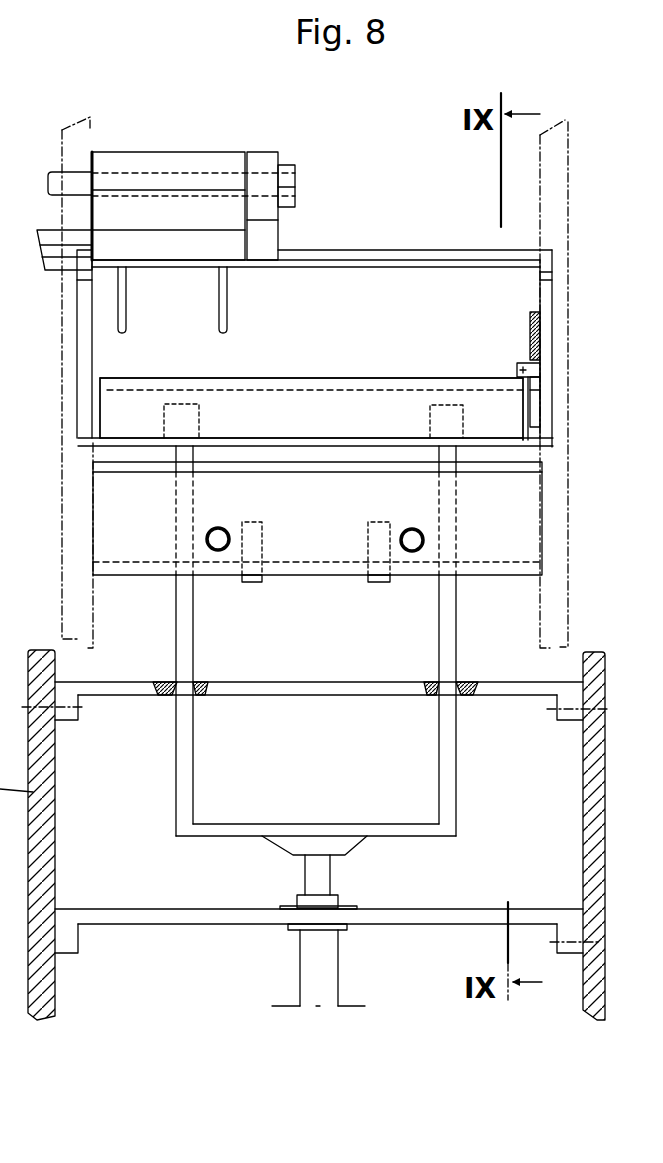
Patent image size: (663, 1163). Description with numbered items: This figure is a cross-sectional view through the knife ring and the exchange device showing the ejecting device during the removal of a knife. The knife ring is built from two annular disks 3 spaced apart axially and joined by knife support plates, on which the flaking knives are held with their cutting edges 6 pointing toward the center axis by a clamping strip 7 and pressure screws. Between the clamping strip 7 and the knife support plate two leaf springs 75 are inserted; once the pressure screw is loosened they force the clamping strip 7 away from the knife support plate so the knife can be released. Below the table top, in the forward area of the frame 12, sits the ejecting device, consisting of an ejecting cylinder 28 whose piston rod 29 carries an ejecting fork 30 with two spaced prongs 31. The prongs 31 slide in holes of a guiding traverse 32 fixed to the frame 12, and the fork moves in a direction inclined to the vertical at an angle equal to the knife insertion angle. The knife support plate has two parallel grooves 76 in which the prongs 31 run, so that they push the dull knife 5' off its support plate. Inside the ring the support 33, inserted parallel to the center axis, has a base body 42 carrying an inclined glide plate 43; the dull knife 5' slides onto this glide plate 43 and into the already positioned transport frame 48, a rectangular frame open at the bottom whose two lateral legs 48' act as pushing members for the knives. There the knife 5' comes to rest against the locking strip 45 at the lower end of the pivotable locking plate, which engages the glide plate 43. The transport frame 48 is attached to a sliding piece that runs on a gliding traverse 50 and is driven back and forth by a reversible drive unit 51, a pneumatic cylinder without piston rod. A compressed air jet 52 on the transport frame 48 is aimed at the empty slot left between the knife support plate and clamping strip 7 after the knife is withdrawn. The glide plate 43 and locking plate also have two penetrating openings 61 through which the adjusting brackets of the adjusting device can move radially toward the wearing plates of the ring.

The annular disks 3 is at (80, 618).
The dull knife 5' is at (315, 424).
The cutting edges 6 is at (375, 387).
The clamping strip 7 is at (289, 506).
The frame 12 is at (593, 805).
The ejecting cylinder 28 is at (323, 975).
The piston rod 29 is at (318, 887).
The ejecting fork 30 is at (355, 830).
The prongs 31 is at (447, 590).
The guiding traverse 32 is at (297, 688).
The support 33 is at (357, 218).
The base body 42 is at (428, 257).
The glide plate 43 is at (79, 349).
The locking strip 45 is at (347, 440).
The transport frame 48 is at (311, 362).
The lateral legs 48' is at (314, 409).
The gliding traverse 50 is at (57, 237).
The reversible drive unit 51 is at (56, 155).
The compressed air jet 52 is at (540, 403).
The penetrating openings 61 is at (188, 420).
The leaf springs 75 is at (378, 550).
The parallel grooves 76 is at (193, 574).